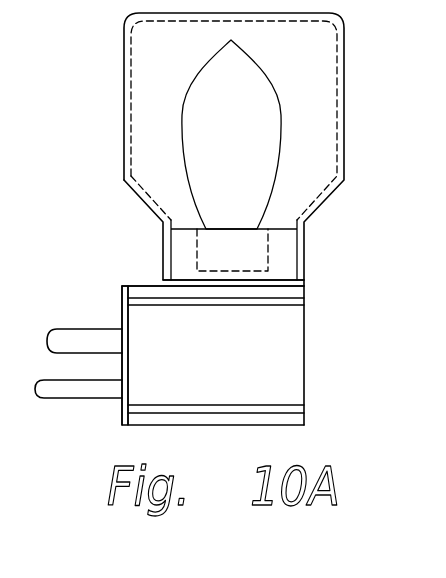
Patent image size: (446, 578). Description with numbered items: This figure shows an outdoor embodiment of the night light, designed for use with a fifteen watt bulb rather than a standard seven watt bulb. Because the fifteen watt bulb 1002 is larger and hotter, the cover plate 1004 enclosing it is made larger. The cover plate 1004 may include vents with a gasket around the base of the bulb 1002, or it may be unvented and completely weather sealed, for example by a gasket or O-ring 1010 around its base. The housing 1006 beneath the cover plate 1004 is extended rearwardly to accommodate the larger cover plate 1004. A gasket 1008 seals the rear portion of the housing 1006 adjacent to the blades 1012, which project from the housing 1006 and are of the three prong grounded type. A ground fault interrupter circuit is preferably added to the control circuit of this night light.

The bulb 1002 is at (257, 160).
The cover plate 1004 is at (343, 117).
The housing 1006 is at (300, 358).
The gasket 1008 is at (121, 293).
The gasket or O-ring 1010 is at (300, 283).
The blades 1012 is at (72, 328).